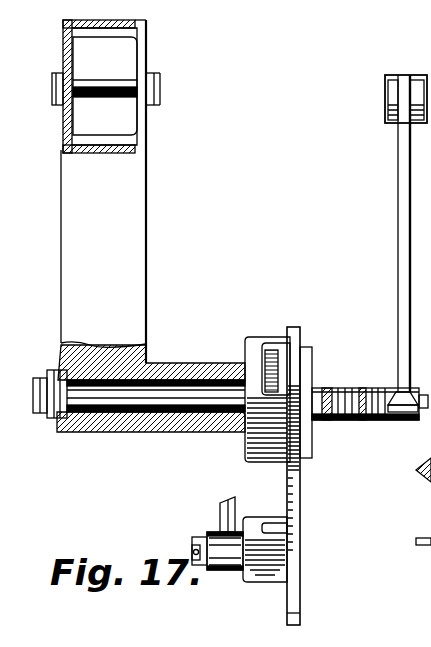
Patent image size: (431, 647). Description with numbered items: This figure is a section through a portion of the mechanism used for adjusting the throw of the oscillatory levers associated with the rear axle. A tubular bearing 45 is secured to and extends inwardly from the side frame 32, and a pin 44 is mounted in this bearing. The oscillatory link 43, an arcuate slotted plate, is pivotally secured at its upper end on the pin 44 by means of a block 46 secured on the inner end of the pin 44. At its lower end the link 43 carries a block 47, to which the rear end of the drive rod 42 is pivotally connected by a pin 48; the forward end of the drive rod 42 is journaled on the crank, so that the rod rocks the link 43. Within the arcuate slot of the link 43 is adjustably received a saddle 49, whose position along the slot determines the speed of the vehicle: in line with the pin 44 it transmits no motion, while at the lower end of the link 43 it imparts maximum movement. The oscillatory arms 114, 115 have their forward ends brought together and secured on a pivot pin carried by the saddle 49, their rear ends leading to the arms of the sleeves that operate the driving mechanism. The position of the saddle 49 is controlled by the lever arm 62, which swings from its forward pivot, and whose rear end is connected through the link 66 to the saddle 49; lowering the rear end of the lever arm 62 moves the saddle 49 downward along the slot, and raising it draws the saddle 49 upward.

The side frame 32 is at (106, 153).
The pin 44 is at (148, 226).
The tubular bearing 45 is at (119, 432).
The block 46 is at (262, 454).
The oscillatory link 43 is at (300, 597).
The saddle 49 is at (312, 368).
The oscillatory arm 114 is at (331, 421).
The oscillatory arm 115 is at (366, 421).
The link 66 is at (400, 253).
The lever arm 62 is at (385, 107).
The drive rod 42 is at (222, 503).
The pin 48 is at (196, 540).
The block 47 is at (243, 581).